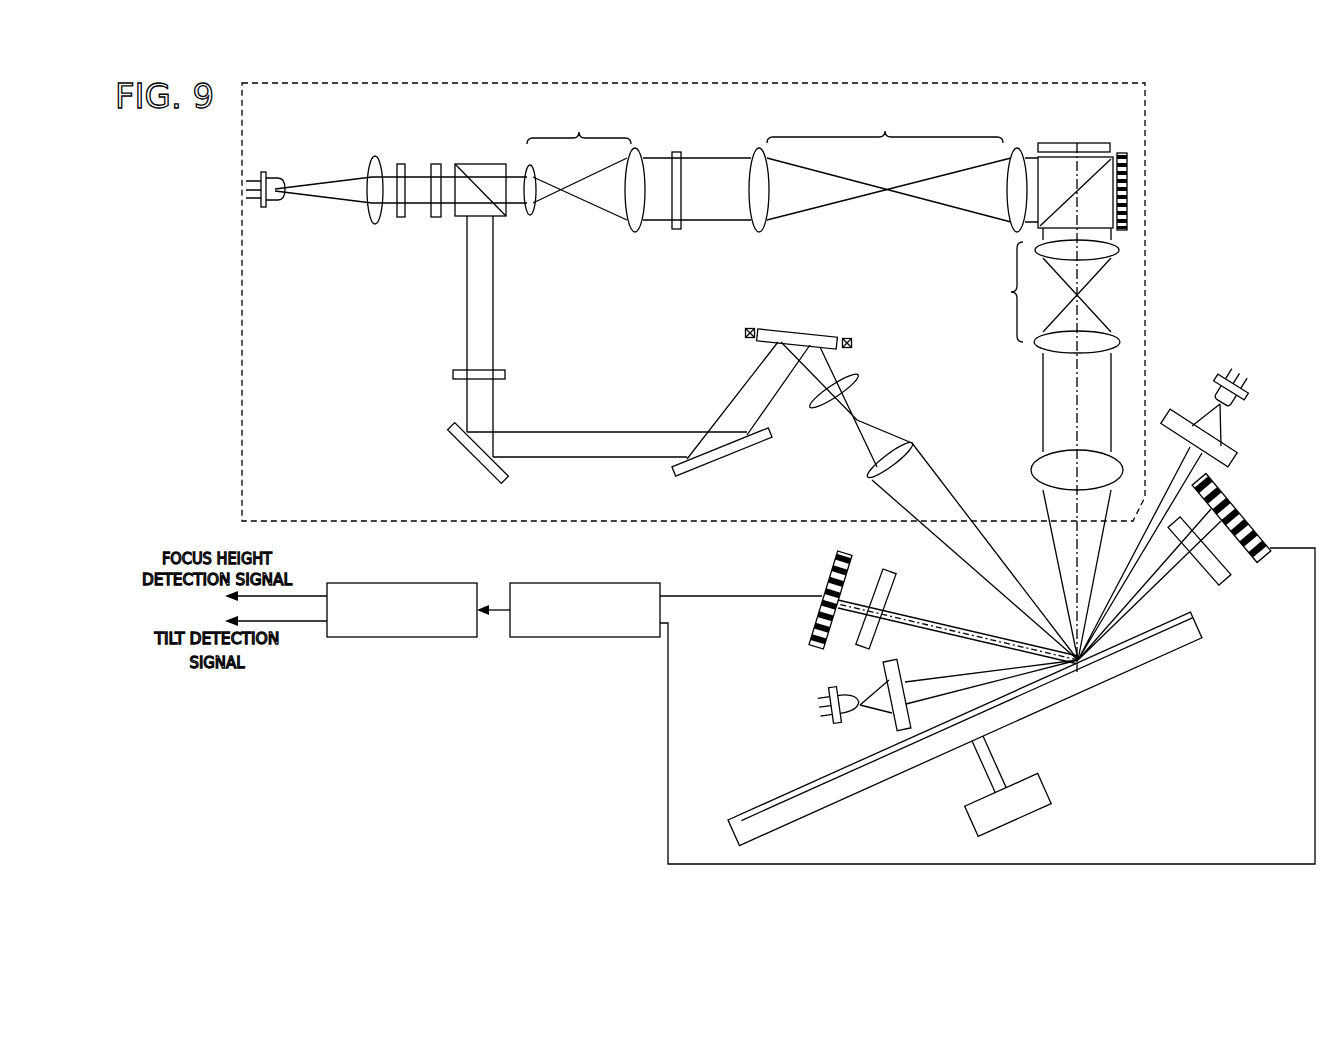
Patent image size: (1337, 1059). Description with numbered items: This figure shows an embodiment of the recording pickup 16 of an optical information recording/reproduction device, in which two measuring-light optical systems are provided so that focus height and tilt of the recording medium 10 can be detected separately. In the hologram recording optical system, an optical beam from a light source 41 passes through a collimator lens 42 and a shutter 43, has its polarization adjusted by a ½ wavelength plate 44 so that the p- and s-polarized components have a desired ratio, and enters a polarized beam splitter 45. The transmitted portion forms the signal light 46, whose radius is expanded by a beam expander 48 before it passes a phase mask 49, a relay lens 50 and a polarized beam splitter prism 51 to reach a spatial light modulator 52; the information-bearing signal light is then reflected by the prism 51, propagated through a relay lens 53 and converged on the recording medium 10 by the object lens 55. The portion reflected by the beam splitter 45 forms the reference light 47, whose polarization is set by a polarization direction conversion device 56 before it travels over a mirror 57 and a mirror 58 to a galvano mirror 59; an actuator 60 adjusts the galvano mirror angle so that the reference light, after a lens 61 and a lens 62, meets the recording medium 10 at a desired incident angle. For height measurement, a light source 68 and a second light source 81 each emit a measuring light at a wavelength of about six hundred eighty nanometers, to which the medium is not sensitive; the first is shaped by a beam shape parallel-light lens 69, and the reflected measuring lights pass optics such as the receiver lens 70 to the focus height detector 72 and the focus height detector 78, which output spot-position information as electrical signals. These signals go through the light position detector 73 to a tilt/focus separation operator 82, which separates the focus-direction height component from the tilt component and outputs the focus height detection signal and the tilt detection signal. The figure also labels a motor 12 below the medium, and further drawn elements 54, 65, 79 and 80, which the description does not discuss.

The recording medium 10 is at (1204, 606).
The motor 12 is at (970, 822).
The pickup 16 is at (242, 492).
The light source 41 is at (278, 168).
The collimator lens 42 is at (375, 154).
The shutter 43 is at (401, 163).
The ½ wavelength plate 44 is at (436, 163).
The polarized beam splitter 45 is at (452, 222).
The signal light 46 is at (710, 170).
The reference light 47 is at (493, 248).
The beam expander 48 is at (584, 170).
The phase mask 49 is at (672, 232).
The relay lens 50 is at (897, 169).
The polarized beam splitter prism 51 is at (1050, 178).
The spatial light modulator 52 is at (1128, 204).
The relay lens 53 is at (1052, 297).
The lens 54 is at (1120, 254).
The object lens 55 is at (1034, 468).
The polarization direction conversion device 56 is at (453, 374).
The mirror 57 is at (470, 462).
The mirror 58 is at (676, 470).
The galvano mirror 59 is at (818, 332).
The actuator 60 is at (852, 343).
The lens 61 is at (860, 379).
The lens 62 is at (906, 446).
The photodetector 65 is at (1088, 142).
The light source 68 is at (1222, 374).
The beam shape parallel-light lens 69 is at (1236, 454).
The receiver lens 70 is at (896, 568).
The focus height detector 72 is at (842, 550).
The light position detector 73 is at (546, 582).
The focus height detector 78 is at (1248, 526).
The transparent plate 79 is at (1224, 584).
The transparent plate 80 is at (905, 668).
The light source 81 is at (830, 718).
The tilt/focus separation operator 82 is at (390, 582).